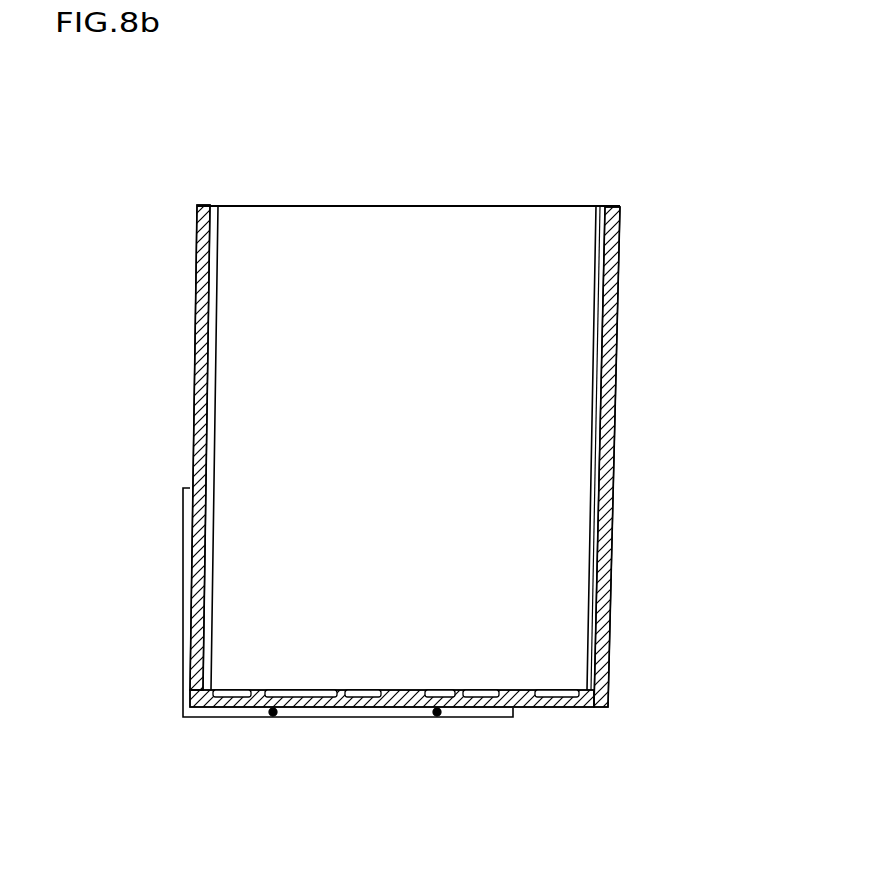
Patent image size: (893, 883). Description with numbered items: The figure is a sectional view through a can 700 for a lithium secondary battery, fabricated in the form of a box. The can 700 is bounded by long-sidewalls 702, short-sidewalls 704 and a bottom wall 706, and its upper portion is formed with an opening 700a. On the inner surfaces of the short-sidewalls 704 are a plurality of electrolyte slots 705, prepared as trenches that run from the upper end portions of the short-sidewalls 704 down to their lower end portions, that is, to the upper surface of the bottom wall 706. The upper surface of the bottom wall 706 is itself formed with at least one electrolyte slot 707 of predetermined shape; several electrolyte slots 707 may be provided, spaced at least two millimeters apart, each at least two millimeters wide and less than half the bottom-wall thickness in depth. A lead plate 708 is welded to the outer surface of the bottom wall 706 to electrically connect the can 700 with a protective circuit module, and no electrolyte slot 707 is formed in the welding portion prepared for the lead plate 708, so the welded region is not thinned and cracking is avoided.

The can 700 is at (670, 156).
The opening 700a is at (312, 205).
The long-sidewalls 702 is at (403, 210).
The short-sidewalls 704 is at (617, 287).
The electrolyte slots 705 is at (592, 398).
The bottom wall 706 is at (605, 698).
The electrolyte slot 707 is at (243, 697).
The lead plate 708 is at (183, 633).